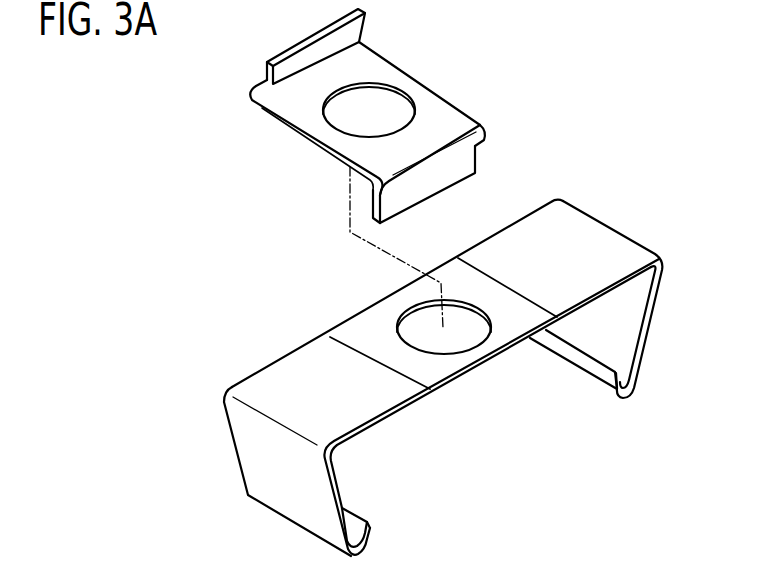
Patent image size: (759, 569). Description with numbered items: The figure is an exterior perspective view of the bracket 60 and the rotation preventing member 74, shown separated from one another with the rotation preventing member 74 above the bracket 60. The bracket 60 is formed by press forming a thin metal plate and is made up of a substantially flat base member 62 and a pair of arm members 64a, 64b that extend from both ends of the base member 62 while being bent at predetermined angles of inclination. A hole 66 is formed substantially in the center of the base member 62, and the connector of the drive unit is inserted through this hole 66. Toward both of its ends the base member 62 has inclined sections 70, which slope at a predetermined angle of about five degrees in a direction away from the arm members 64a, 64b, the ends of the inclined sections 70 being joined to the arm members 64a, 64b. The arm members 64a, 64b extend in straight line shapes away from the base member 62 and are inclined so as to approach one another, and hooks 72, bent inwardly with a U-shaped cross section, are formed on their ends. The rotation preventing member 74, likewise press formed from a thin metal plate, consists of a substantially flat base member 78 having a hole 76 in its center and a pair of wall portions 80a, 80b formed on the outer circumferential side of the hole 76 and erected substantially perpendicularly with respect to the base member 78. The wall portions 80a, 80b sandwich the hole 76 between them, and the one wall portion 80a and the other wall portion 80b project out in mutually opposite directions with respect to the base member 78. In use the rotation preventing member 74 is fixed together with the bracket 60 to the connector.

The bracket 60 is at (439, 345).
The base member 62 is at (441, 370).
The arm member 64a is at (252, 437).
The arm member 64b is at (618, 320).
The hole 66 is at (455, 321).
The inclined sections 70 is at (587, 230).
The hooks 72 is at (607, 386).
The rotation preventing member 74 is at (383, 116).
The hole 76 is at (345, 120).
The base member 78 is at (433, 117).
The wall portion 80a is at (306, 59).
The wall portion 80b is at (442, 177).